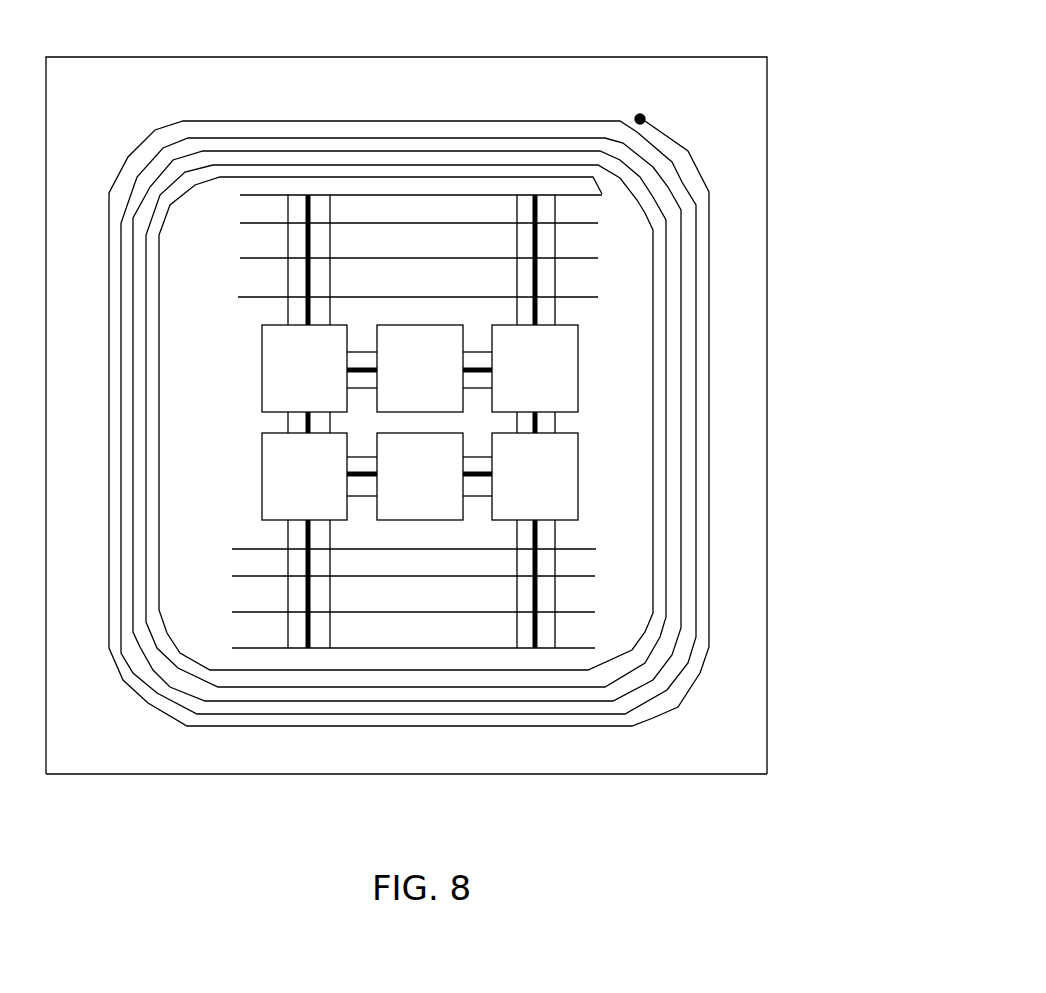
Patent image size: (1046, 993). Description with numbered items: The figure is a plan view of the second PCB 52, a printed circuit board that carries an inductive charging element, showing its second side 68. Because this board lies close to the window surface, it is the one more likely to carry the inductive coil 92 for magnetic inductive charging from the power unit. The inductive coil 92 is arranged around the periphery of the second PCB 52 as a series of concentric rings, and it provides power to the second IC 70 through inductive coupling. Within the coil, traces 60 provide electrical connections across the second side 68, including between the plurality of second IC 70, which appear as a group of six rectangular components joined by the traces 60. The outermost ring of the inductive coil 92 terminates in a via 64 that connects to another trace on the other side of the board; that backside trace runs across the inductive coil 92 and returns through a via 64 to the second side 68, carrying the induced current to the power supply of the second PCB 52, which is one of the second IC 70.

The second PCB 52 is at (733, 131).
The traces 60 is at (568, 262).
The via 64 is at (644, 114).
The second side 68 is at (127, 732).
The second IC 70 is at (802, 437).
The inductive coil 92 is at (657, 721).